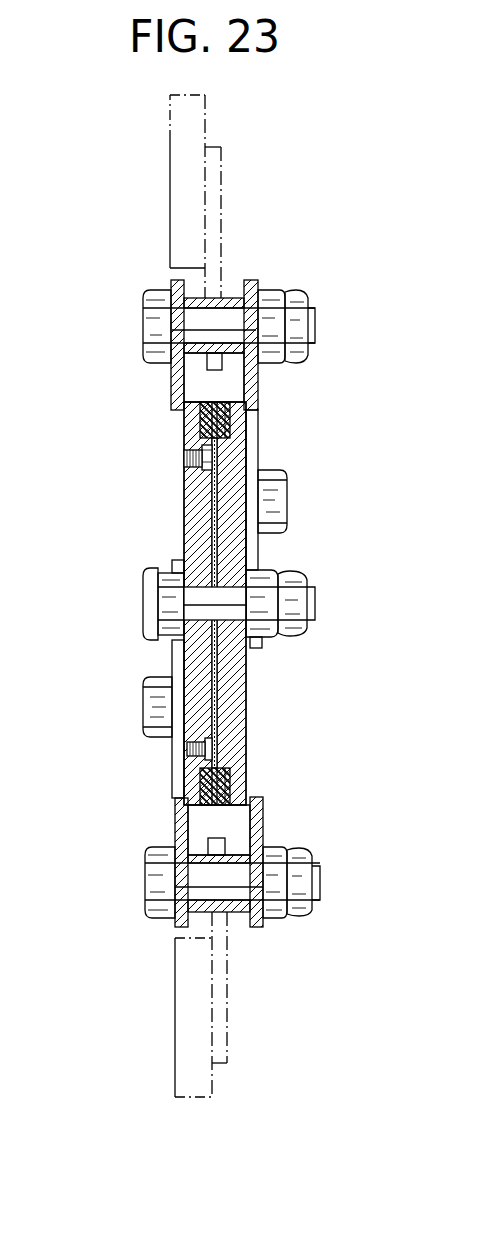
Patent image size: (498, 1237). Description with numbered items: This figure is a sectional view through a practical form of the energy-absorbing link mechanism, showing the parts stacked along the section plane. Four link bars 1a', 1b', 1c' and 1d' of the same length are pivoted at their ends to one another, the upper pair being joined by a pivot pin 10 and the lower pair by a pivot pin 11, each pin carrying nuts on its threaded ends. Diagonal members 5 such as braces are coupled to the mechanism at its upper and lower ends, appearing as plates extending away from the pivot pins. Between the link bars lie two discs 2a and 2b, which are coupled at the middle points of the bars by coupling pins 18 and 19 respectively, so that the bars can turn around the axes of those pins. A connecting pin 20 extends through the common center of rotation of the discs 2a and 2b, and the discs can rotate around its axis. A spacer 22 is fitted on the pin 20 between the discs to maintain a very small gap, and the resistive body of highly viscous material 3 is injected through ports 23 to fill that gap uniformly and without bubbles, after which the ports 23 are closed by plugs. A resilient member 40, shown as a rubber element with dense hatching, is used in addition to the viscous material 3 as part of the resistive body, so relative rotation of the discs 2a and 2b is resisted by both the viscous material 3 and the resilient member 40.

The diagonal member 5 is at (195, 118).
The pivot pin 10 is at (183, 325).
The link bar 1a' is at (173, 345).
The link bar 1b' is at (261, 425).
The resilient member 40 is at (217, 402).
The port 23 is at (184, 457).
The disc 2a is at (196, 488).
The disc 2b is at (232, 655).
The resistive body 3 is at (220, 700).
The spacer 22 is at (213, 565).
The coupling pin 19 is at (272, 502).
The coupling pin 18 is at (160, 703).
The connecting pin 20 is at (141, 608).
The link bar 1c' is at (180, 783).
The link bar 1d' is at (262, 857).
The pivot pin 11 is at (199, 875).